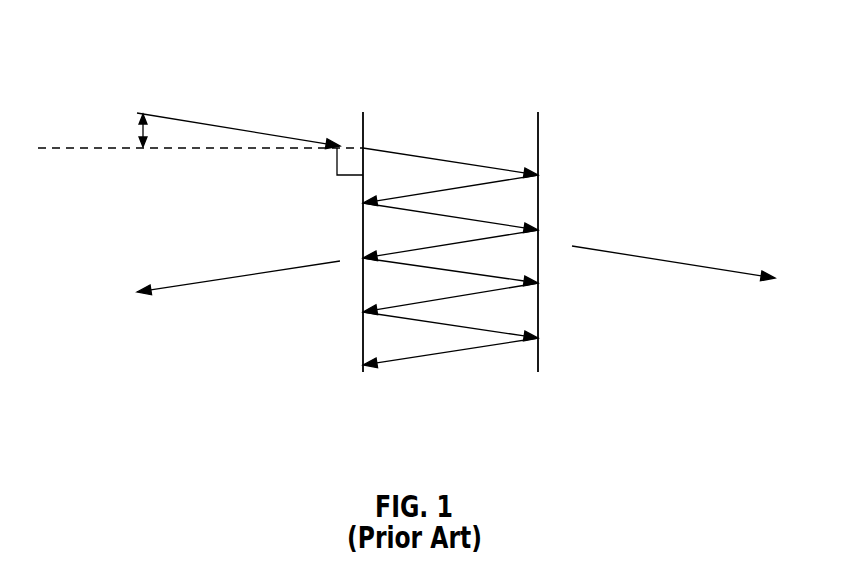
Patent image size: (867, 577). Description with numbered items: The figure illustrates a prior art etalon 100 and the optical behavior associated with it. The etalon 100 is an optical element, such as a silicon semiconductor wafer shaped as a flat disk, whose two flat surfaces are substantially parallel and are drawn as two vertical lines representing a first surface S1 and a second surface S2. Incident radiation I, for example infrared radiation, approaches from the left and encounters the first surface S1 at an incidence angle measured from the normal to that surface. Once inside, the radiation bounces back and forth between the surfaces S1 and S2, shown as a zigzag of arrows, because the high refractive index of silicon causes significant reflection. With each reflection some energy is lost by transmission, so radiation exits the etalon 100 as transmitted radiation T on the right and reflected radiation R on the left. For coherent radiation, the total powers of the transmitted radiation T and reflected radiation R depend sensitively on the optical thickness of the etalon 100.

The etalon 100 is at (452, 237).
The first surface S1 is at (363, 382).
The second surface S2 is at (538, 382).
The incident radiation I is at (238, 116).
The reflected radiation R is at (238, 293).
The transmitted radiation T is at (673, 251).